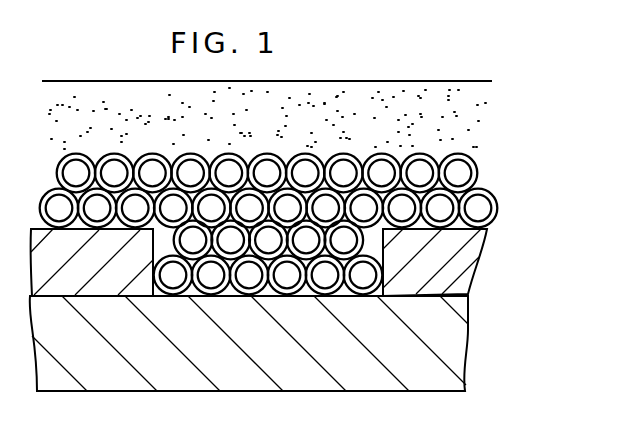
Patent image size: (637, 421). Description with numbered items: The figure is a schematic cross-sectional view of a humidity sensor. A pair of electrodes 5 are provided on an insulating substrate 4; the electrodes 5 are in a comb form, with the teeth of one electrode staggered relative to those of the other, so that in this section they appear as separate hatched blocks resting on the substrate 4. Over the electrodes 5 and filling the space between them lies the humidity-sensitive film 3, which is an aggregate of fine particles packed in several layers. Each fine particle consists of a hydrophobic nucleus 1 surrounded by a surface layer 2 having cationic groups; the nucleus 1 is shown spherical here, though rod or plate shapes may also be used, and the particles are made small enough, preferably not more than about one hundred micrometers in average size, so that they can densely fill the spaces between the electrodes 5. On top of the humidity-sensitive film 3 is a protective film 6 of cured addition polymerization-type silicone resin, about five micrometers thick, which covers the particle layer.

The hydrophobic nucleus 1 is at (49, 210).
The surface layer 2 is at (56, 172).
The humidity-sensitive film 3 is at (507, 150).
The substrate 4 is at (445, 332).
The electrodes 5 is at (450, 272).
The protective film 6 is at (447, 117).